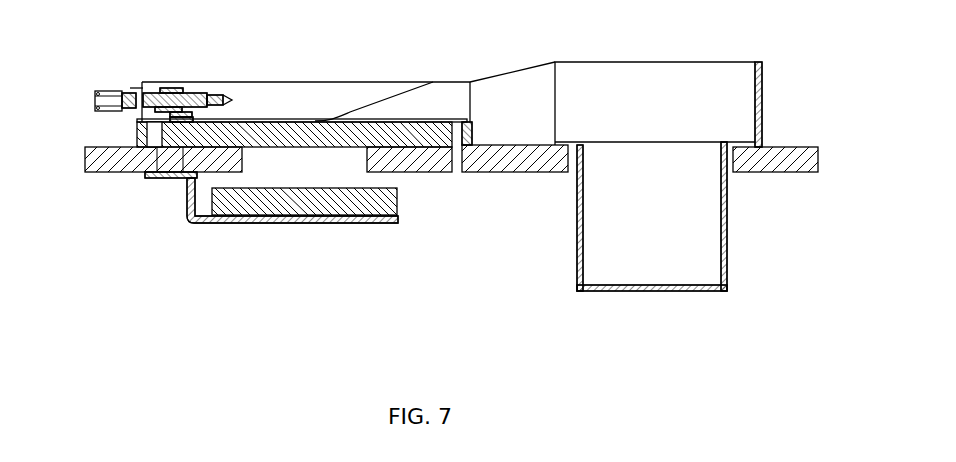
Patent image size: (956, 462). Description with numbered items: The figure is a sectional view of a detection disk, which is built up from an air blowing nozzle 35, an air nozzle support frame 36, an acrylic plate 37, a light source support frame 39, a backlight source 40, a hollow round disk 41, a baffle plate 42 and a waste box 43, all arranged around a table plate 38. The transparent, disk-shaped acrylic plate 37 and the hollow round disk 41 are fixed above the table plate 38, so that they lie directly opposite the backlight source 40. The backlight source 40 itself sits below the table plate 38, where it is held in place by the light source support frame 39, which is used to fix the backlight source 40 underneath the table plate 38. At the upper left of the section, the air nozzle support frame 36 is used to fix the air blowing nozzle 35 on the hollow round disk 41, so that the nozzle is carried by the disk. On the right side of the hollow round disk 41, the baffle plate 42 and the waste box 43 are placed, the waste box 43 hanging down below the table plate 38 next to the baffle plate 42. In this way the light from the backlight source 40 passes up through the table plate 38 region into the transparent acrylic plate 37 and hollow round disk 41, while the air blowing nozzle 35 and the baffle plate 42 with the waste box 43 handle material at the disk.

The air blowing nozzle 35 is at (140, 108).
The air nozzle support frame 36 is at (172, 98).
The acrylic plate 37 is at (208, 133).
The table plate 38 is at (242, 152).
The light source support frame 39 is at (297, 223).
The backlight source 40 is at (353, 210).
The hollow round disk 41 is at (395, 108).
The baffle plate 42 is at (513, 112).
The waste box 43 is at (650, 288).